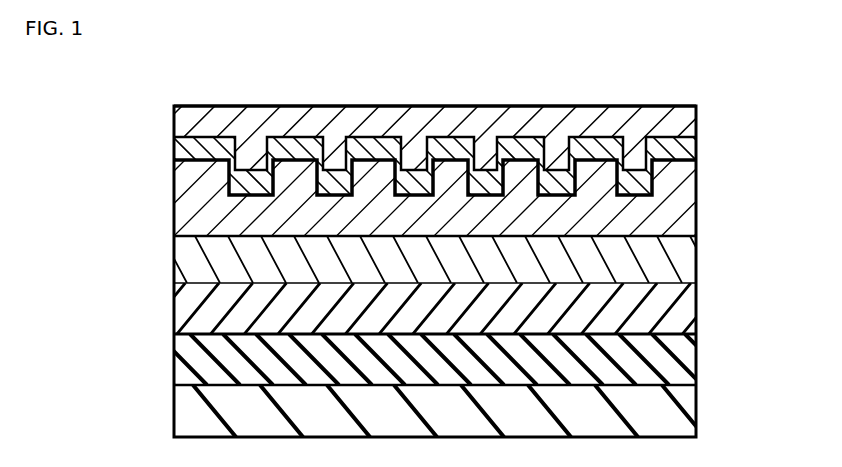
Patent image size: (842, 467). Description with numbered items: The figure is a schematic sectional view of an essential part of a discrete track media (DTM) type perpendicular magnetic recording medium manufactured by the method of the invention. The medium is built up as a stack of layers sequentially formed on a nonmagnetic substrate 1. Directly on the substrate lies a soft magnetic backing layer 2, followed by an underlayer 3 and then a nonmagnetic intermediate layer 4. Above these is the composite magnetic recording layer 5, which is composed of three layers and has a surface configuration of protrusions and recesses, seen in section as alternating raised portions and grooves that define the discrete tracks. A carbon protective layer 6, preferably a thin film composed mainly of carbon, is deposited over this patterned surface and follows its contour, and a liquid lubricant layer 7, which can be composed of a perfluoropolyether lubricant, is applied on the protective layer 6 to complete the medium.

The nonmagnetic substrate 1 is at (696, 404).
The soft magnetic backing layer 2 is at (696, 366).
The underlayer 3 is at (696, 306).
The nonmagnetic intermediate layer 4 is at (696, 254).
The composite magnetic recording layer 5 is at (696, 181).
The carbon protective layer 6 is at (696, 148).
The liquid lubricant layer 7 is at (696, 113).